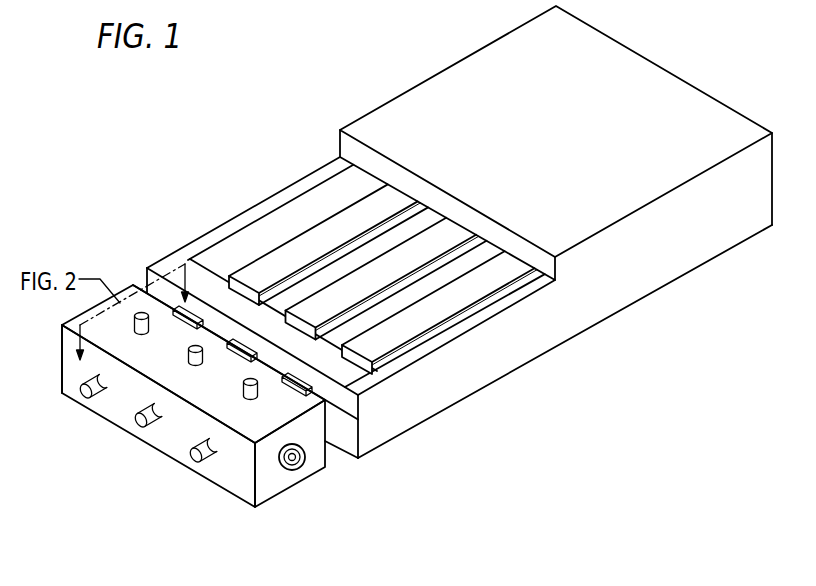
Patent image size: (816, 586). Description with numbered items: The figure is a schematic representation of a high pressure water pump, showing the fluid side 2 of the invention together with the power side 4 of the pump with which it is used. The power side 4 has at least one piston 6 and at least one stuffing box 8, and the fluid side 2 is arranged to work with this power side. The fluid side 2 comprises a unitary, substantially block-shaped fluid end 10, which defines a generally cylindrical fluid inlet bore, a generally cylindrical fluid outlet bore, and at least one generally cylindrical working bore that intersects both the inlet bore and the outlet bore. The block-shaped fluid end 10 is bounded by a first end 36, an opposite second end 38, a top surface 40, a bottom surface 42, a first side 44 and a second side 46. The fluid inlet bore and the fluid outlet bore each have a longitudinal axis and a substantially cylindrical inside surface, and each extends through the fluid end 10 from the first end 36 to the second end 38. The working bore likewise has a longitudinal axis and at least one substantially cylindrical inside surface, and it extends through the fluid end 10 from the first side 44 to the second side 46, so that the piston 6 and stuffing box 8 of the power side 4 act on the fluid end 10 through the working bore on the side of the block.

The fluid side 2 is at (175, 377).
The power side 4 is at (433, 92).
The piston 6 is at (383, 272).
The stuffing box 8 is at (242, 295).
The fluid end 10 is at (427, 307).
The first end 36 is at (60, 357).
The second end 38 is at (308, 485).
The top surface 40 is at (229, 397).
The bottom surface 42 is at (144, 424).
The first side 44 is at (362, 413).
The second side 46 is at (158, 416).